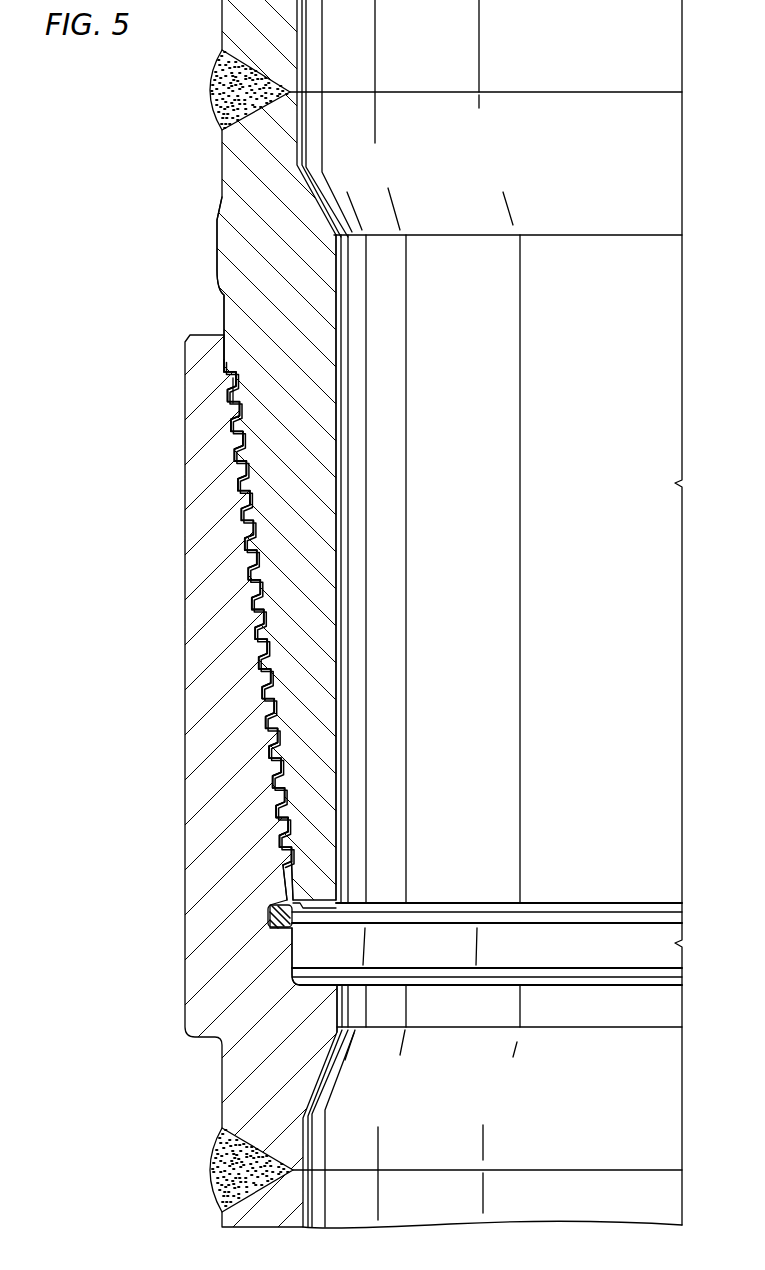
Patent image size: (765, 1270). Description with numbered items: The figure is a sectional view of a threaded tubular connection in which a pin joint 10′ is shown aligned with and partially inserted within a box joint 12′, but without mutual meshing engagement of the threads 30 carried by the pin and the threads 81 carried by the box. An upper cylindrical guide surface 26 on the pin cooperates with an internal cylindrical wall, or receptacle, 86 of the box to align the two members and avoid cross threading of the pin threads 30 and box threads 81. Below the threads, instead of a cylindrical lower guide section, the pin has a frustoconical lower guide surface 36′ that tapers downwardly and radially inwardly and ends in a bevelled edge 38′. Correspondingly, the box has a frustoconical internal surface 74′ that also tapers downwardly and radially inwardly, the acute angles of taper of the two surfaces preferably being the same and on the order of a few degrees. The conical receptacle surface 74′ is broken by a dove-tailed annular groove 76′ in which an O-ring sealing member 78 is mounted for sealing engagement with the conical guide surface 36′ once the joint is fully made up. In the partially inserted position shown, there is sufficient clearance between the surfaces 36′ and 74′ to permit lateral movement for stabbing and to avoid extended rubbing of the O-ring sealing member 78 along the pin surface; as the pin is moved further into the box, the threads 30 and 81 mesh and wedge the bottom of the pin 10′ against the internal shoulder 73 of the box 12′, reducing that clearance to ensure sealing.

The pin joint 10′ is at (176, 177).
The box joint 12′ is at (182, 1027).
The upper cylindrical guide surface 26 is at (224, 316).
The internal cylindrical wall 86 is at (233, 408).
The pin threads 30 is at (252, 543).
The box threads 81 is at (247, 545).
The frustoconical lower guide surface 36′ is at (288, 850).
The bevelled edge 38′ is at (302, 900).
The dove-tailed annular groove 76′ is at (270, 912).
The frustoconical internal surface 74′ is at (292, 945).
The internal shoulder 73 is at (300, 984).
The O-ring sealing member 78 is at (558, 920).